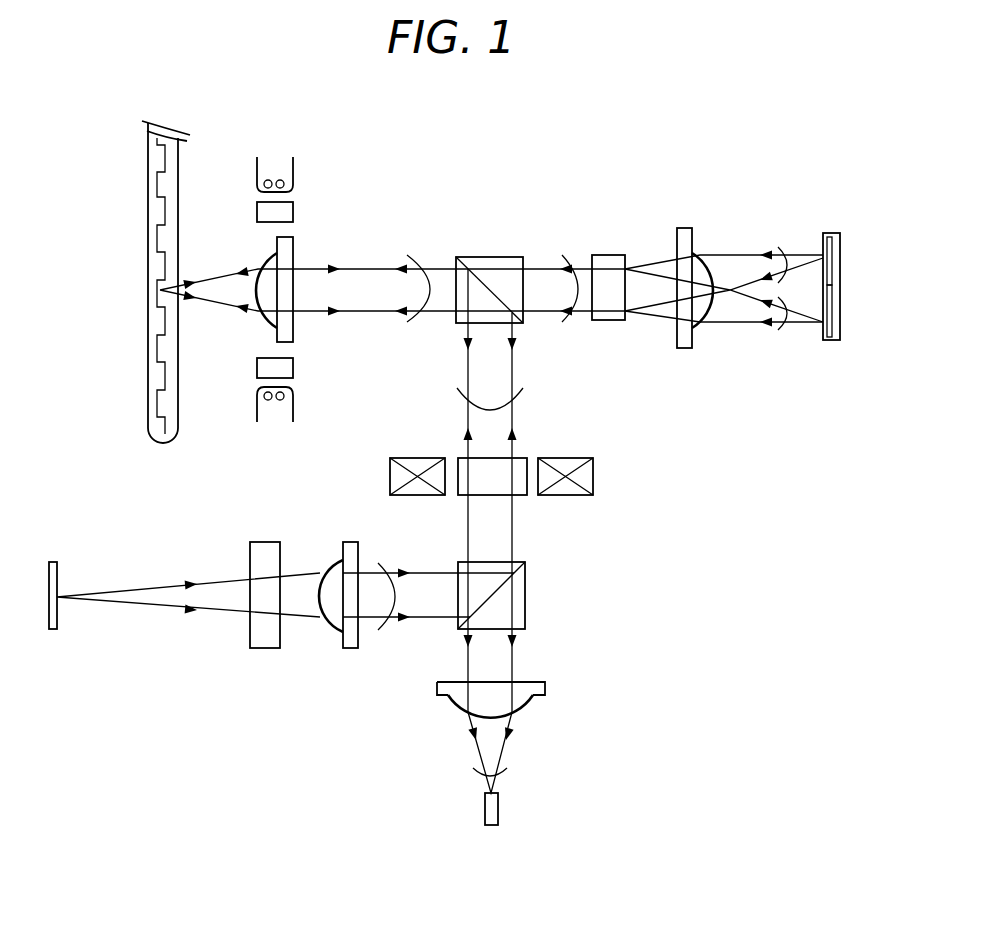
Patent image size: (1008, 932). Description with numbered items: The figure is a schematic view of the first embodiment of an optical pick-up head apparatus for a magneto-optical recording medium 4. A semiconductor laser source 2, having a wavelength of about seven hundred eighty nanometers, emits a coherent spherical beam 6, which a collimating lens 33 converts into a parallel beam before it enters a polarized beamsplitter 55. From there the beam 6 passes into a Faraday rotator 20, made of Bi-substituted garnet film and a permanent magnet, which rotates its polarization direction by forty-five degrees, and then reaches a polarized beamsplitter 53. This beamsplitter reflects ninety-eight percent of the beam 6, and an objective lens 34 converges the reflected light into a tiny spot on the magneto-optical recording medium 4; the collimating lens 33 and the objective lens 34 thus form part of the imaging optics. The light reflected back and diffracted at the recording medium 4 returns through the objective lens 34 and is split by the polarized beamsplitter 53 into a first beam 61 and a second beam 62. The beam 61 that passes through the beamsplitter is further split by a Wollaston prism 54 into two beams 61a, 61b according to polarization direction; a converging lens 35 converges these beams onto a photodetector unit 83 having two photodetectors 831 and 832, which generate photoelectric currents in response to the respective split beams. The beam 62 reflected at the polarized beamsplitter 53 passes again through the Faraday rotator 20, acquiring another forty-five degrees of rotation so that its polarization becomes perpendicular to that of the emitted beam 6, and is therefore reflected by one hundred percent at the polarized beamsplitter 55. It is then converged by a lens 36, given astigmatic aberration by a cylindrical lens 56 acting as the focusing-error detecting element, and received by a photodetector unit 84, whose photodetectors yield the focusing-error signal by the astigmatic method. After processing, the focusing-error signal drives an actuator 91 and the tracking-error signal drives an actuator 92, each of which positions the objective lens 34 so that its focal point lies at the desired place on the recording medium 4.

The semiconductor laser source 2 is at (483, 808).
The magneto-optical recording medium 4 is at (183, 165).
The beam 6 is at (407, 322).
The Faraday rotator 20 is at (593, 478).
The collimating lens 33 is at (547, 688).
The objective lens 34 is at (293, 256).
The converging lens 35 is at (682, 350).
The lens 36 is at (345, 650).
The polarized beamsplitter 53 is at (497, 257).
The Wollaston prism 54 is at (607, 255).
The polarized beamsplitter 55 is at (527, 598).
The cylindrical lens 56 is at (265, 650).
The beam 61 is at (568, 253).
The beam 61a is at (780, 248).
The beam 61b is at (778, 330).
The beam 62 is at (523, 388).
The photodetector unit 83 is at (835, 291).
The photodetector 831 is at (823, 240).
The photodetector 832 is at (823, 332).
The photodetector unit 84 is at (56, 632).
The actuator 91 is at (305, 155).
The actuator 92 is at (305, 358).